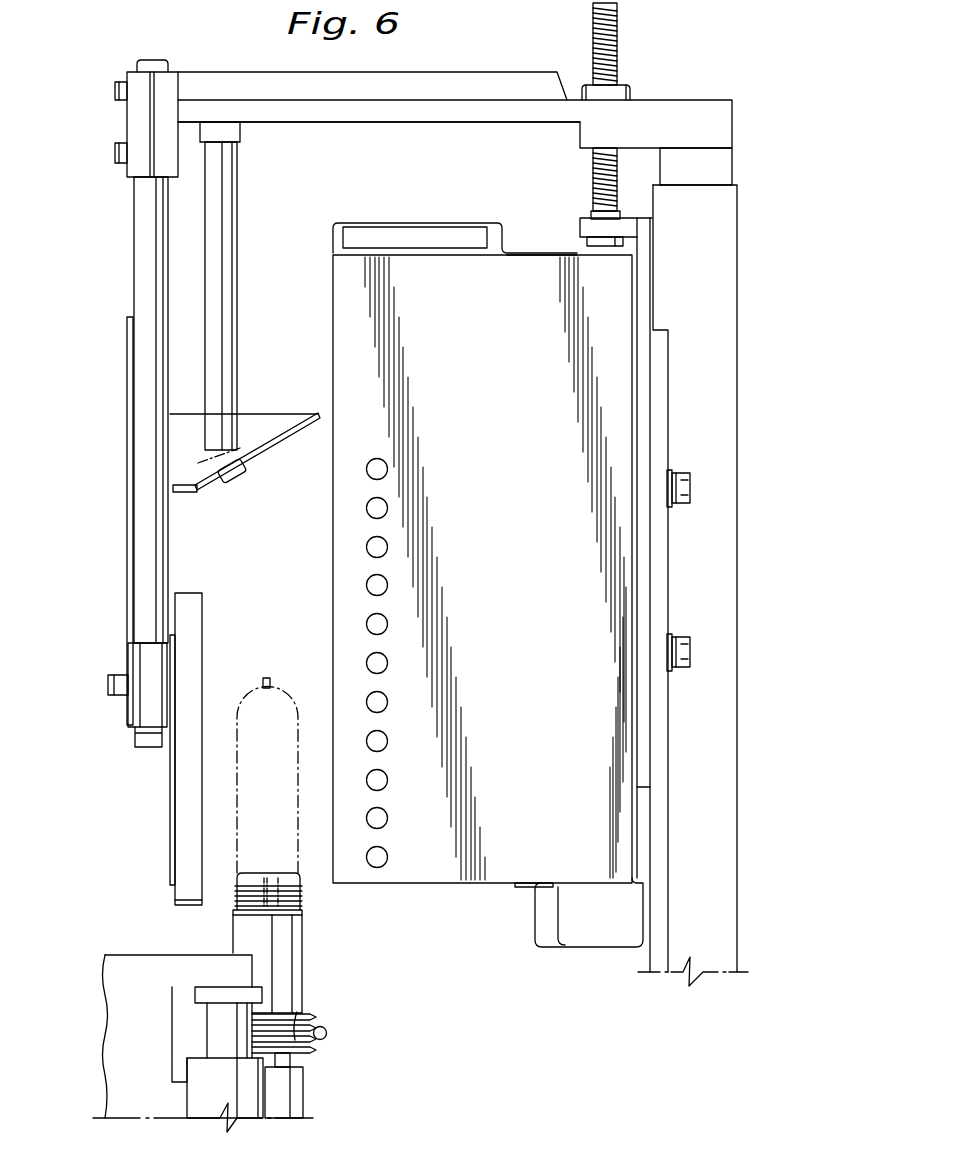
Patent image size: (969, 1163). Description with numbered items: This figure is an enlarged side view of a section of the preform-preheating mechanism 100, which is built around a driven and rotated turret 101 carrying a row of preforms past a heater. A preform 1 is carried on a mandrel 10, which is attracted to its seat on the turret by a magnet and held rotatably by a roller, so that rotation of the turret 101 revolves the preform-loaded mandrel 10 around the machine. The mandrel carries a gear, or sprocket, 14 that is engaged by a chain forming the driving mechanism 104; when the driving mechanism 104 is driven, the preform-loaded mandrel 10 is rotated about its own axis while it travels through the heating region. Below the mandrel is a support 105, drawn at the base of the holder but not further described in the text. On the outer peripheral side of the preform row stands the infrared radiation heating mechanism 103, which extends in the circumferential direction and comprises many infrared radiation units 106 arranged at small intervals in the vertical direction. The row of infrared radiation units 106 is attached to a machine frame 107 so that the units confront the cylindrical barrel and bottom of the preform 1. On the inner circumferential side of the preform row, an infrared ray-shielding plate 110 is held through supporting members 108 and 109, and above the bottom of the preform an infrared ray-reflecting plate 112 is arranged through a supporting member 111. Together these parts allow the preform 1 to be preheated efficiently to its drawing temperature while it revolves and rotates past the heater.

The preform 1 is at (237, 777).
The mandrel 10 is at (310, 945).
The gear (sprocket) 14 is at (297, 1012).
The preform-preheating mechanism 100 is at (640, 88).
The turret 101 is at (153, 953).
The infrared radiation heating mechanism 103 is at (440, 217).
The driving mechanism 104 is at (332, 1033).
The support 105 is at (257, 1094).
The infrared radiation units 106 is at (366, 585).
The machine frame 107 is at (725, 427).
The supporting member 108 is at (346, 122).
The supporting member 109 is at (143, 285).
The infrared ray-shielding plate 110 is at (178, 788).
The supporting member 111 is at (233, 278).
The infrared ray-reflecting plate 112 is at (273, 443).